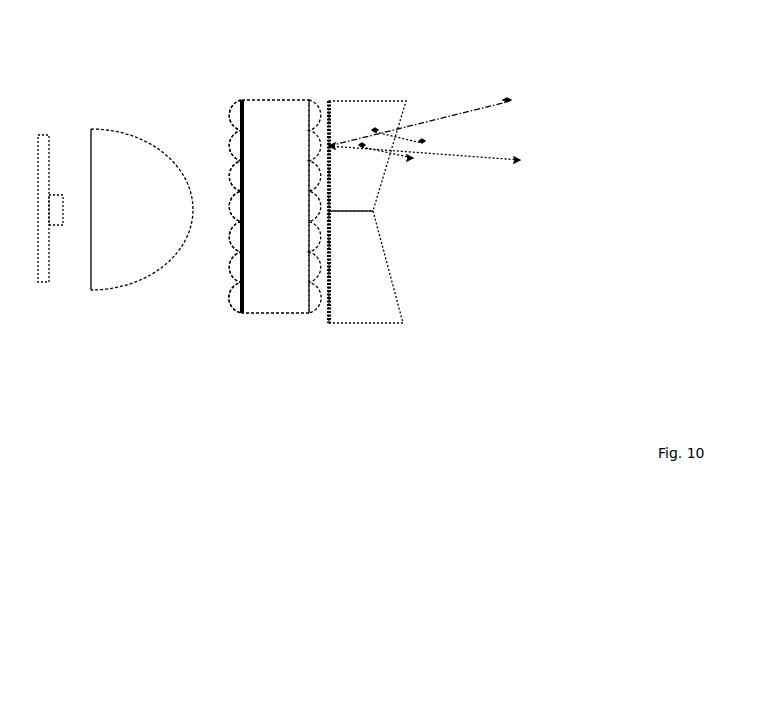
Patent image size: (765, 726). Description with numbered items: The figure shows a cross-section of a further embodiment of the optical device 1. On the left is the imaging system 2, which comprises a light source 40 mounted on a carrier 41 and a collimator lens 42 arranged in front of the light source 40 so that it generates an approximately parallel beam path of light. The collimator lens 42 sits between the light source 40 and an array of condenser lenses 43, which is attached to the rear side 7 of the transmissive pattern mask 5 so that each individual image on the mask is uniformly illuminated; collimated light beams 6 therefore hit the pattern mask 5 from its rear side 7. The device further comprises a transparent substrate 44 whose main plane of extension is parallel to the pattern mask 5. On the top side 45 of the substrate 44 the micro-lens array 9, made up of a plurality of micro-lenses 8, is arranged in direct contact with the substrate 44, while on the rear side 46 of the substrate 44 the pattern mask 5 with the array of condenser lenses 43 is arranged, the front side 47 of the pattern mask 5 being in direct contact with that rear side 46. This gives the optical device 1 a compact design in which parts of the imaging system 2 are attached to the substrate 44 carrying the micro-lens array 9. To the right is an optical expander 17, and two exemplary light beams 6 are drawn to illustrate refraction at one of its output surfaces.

The optical device 1 is at (533, 43).
The imaging system 2 is at (243, 332).
The pattern mask 5 is at (244, 104).
The light beams 6 is at (470, 109).
The rear side 7 is at (240, 309).
The micro-lens 8 is at (328, 101).
The micro-lens array 9 is at (320, 332).
The optical expander 17 is at (362, 100).
The light source 40 is at (53, 196).
The carrier 41 is at (44, 135).
The collimator lens 42 is at (128, 145).
The array of condenser lenses 43 is at (240, 106).
The transparent substrate 44 is at (258, 99).
The top side 45 is at (307, 200).
The rear side 46 is at (243, 277).
The front side 47 is at (235, 206).